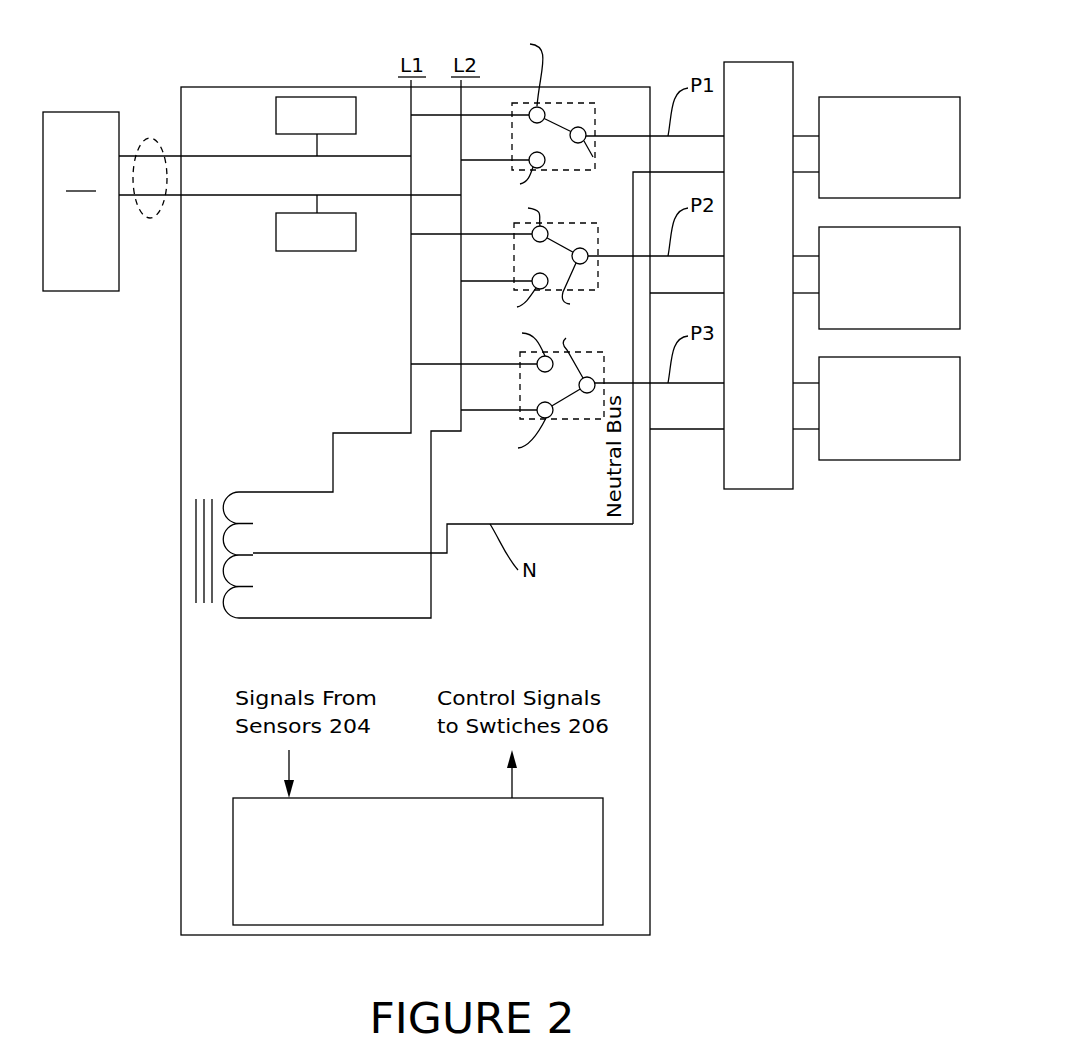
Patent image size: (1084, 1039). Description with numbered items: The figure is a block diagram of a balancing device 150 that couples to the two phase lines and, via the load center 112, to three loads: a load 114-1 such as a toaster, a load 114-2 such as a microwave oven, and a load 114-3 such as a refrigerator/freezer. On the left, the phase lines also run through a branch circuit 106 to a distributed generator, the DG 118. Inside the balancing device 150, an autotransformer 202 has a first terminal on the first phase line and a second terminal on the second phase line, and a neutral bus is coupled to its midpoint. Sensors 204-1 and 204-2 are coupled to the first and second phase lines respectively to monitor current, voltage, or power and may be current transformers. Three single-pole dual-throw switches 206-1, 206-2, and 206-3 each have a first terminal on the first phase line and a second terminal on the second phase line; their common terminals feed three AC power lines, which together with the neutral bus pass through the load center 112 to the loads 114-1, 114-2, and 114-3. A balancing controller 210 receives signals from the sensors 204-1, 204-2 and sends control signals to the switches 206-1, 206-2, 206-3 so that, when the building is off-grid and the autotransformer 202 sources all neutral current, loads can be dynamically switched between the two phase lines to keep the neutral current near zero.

The branch circuit 106 is at (149, 140).
The DG 118 is at (62, 248).
The balancing device 150 is at (206, 127).
The sensor 204-1 is at (287, 127).
The sensor 204-2 is at (287, 245).
The autotransformer 202 is at (210, 483).
The single-pole dual-throw switch 206-1 is at (580, 103).
The single-pole dual-throw switch 206-2 is at (549, 223).
The single-pole dual-throw switch 206-3 is at (584, 420).
The load center 112 is at (739, 287).
The load 114-1 is at (876, 147).
The load 114-2 is at (876, 278).
The load 114-3 is at (876, 408).
The balancing controller 210 is at (398, 889).